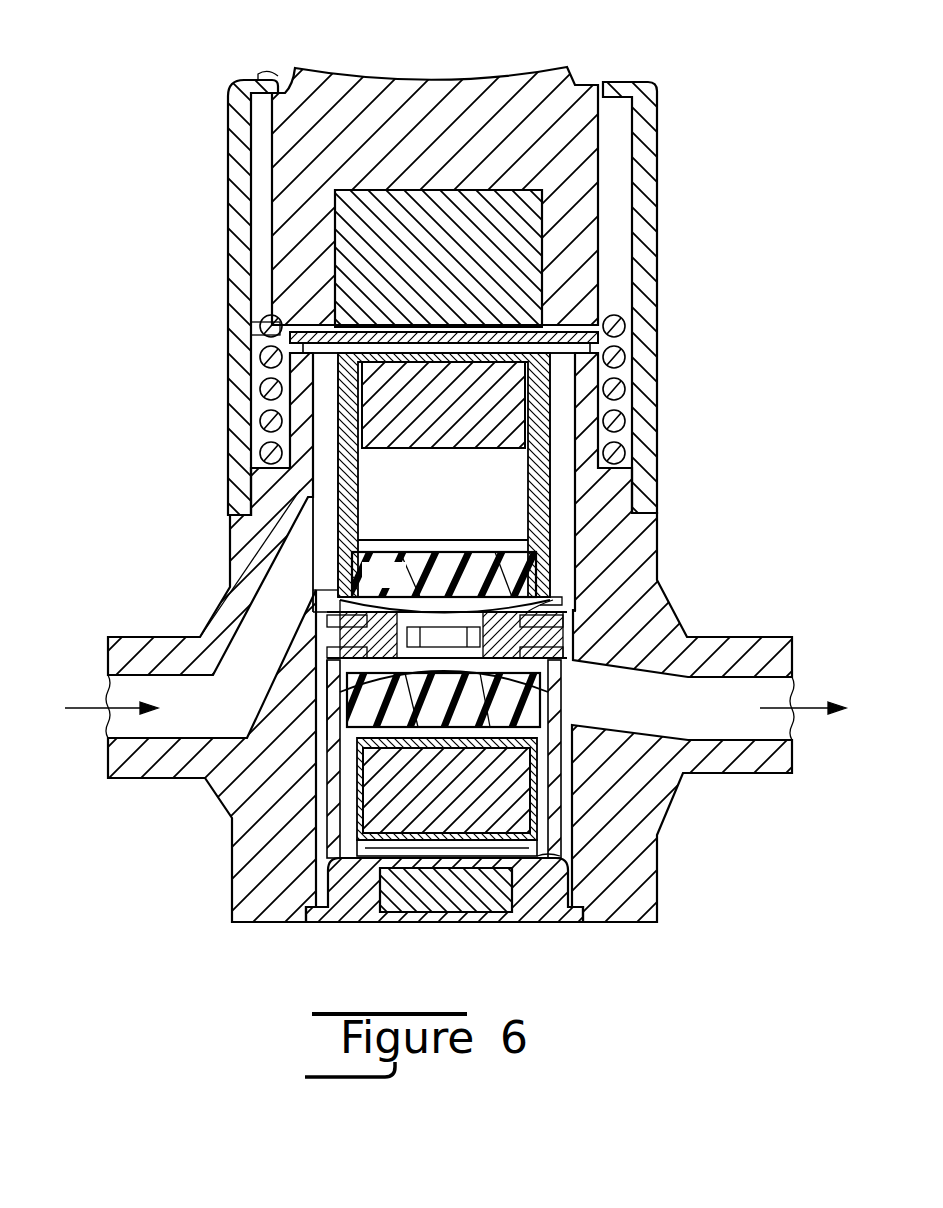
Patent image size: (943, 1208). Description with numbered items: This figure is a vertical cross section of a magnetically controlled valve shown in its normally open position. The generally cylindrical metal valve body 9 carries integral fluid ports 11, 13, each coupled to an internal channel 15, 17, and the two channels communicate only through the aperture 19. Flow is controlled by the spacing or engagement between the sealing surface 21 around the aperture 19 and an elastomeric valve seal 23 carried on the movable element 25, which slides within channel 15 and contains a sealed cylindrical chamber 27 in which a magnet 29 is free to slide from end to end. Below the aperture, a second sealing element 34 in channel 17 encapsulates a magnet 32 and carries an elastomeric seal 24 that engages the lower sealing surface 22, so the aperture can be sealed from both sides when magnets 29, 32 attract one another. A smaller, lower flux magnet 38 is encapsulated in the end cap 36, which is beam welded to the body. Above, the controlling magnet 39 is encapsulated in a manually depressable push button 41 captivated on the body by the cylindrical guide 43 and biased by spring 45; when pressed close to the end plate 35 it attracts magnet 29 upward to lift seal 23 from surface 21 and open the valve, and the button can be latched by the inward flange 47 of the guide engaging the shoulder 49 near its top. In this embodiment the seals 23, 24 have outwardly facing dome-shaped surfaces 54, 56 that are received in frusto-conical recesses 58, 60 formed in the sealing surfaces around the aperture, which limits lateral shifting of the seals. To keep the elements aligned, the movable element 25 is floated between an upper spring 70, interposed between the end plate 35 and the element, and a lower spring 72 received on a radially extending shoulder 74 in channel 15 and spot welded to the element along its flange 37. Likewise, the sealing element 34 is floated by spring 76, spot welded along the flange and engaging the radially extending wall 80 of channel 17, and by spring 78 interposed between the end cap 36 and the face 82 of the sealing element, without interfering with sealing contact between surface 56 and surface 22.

The valve body 9 is at (640, 566).
The fluid port 11 is at (145, 700).
The fluid port 13 is at (760, 701).
The internal channel 15 is at (322, 517).
The internal channel 17 is at (567, 708).
The aperture 19 is at (442, 578).
The sealing surface 21 is at (340, 598).
The sealing surface 22 is at (350, 620).
The valve seal 23 is at (360, 566).
The elastomeric seal 24 is at (336, 782).
The movable element 25 is at (343, 478).
The chamber 27 is at (515, 492).
The magnet 29 is at (484, 426).
The magnet 32 is at (335, 828).
The sealing element 34 is at (580, 782).
The end plate 35 is at (600, 333).
The end cap 36 is at (520, 914).
The flange 37 is at (506, 578).
The magnet 38 is at (390, 916).
The magnet 39 is at (520, 235).
The push button 41 is at (552, 74).
The cylindrical guide 43 is at (650, 160).
The spring 45 is at (588, 346).
The inward flange 47 is at (272, 74).
The shoulder 49 is at (336, 70).
The dome-shaped surface 54 is at (415, 576).
The dome-shaped surface 56 is at (418, 722).
The frusto-conical recess 58 is at (384, 577).
The frusto-conical recess 60 is at (485, 705).
The upper spring 70 is at (262, 378).
The lower spring 72 is at (568, 592).
The shoulder 74 is at (577, 605).
The spring 76 is at (330, 650).
The spring 78 is at (560, 850).
The radially extending wall 80 is at (340, 712).
The face 82 is at (545, 858).